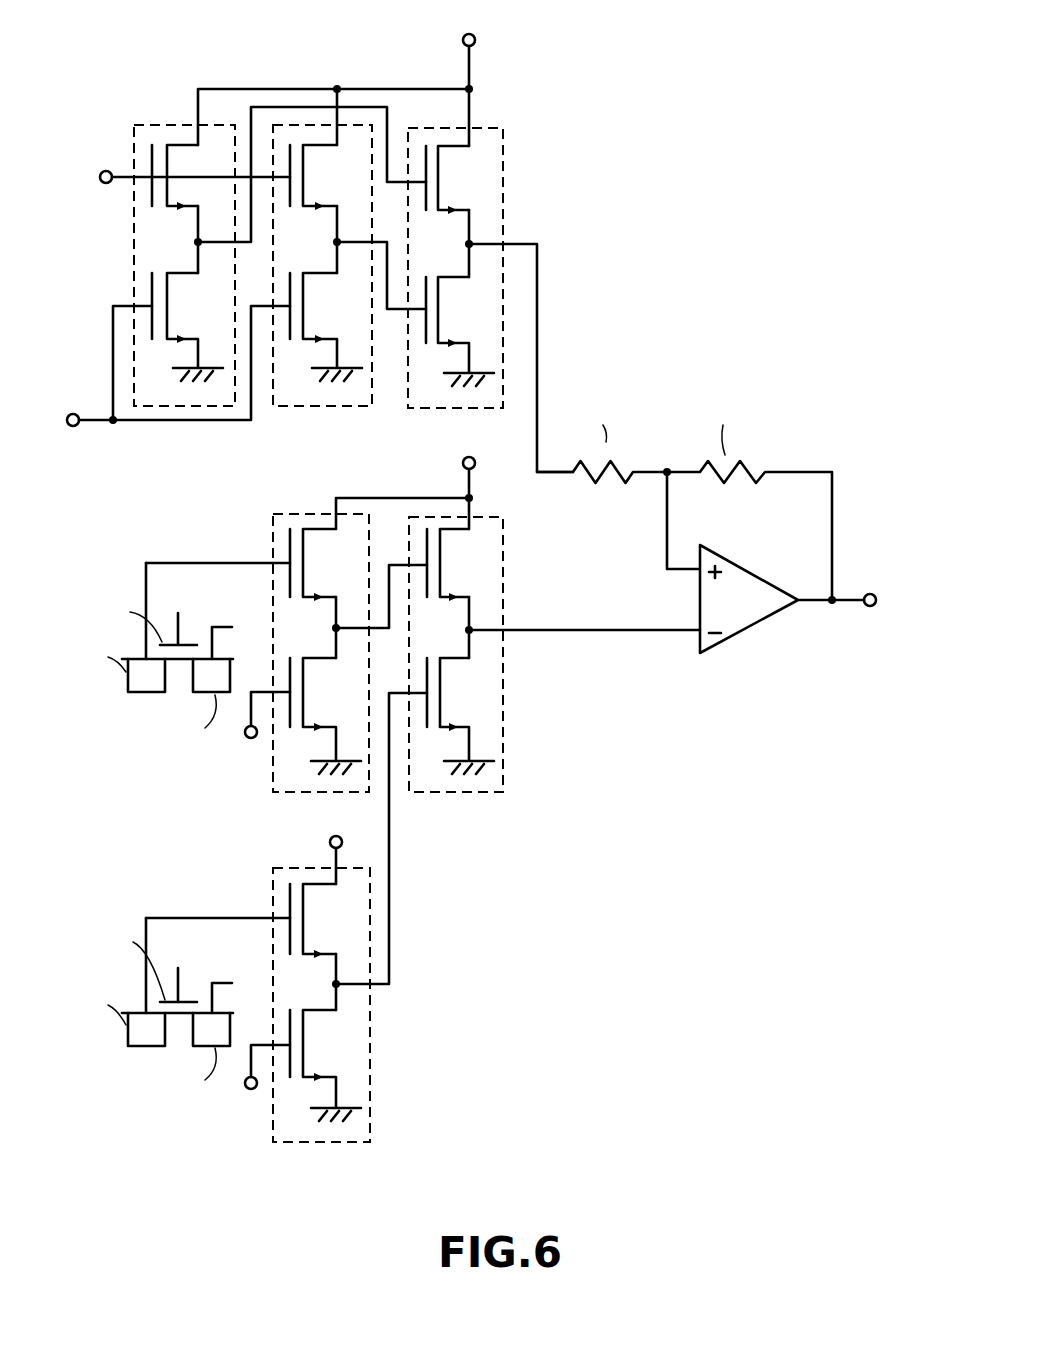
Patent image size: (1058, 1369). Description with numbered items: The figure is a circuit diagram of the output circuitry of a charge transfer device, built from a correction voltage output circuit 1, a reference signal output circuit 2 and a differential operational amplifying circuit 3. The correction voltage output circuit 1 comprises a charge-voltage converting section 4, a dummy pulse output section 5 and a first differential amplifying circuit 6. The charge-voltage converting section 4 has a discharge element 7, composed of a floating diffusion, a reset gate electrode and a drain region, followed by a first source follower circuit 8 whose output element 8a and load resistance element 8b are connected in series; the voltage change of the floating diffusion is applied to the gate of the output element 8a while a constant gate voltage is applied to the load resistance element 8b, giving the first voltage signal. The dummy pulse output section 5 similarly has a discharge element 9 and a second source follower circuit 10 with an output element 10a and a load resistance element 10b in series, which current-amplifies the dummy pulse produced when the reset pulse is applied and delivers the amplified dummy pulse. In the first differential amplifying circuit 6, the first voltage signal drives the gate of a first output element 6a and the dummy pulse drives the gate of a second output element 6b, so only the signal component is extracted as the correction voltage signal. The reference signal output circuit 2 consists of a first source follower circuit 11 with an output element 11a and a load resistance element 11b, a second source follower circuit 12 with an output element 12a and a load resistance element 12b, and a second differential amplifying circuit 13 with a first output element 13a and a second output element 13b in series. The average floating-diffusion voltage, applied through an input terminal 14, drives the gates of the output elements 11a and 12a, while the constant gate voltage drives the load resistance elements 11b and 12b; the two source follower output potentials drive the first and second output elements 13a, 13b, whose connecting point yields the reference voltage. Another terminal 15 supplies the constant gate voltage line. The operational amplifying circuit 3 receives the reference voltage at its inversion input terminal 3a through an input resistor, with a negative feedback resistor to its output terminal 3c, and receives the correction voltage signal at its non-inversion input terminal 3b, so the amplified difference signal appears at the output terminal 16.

The correction voltage output circuit 1 is at (507, 835).
The reference signal output circuit 2 is at (280, 70).
The differential operational amplifying circuit 3 is at (765, 615).
The inversion input terminal 3a is at (700, 577).
The non-inversion input terminal 3b is at (700, 640).
The output terminal 3c is at (800, 593).
The charge-voltage converting section 4 is at (170, 523).
The dummy pulse output section 5 is at (165, 878).
The first differential amplifying circuit 6 is at (507, 680).
The first output element 6a is at (440, 570).
The second output element 6b is at (440, 714).
The discharge element 7 is at (130, 702).
The first source follower circuit 8 is at (272, 532).
The output element 8a is at (312, 527).
The load resistance element 8b is at (300, 740).
The discharge element 9 is at (132, 1062).
The second source follower circuit 10 is at (370, 1122).
The output element 10a is at (303, 900).
The load resistance element 10b is at (303, 1063).
The first source follower circuit 11 is at (165, 125).
The output element 11a is at (177, 209).
The load resistance element 11b is at (152, 283).
The second source follower circuit 12 is at (342, 418).
The output element 12a is at (320, 143).
The load resistance element 12b is at (307, 350).
The second differential amplifying circuit 13 is at (487, 128).
The first output element 13a is at (438, 162).
The second output element 13b is at (438, 297).
The input terminal 14 is at (105, 170).
The gate voltage terminal Vgg1 15 is at (73, 413).
The output terminal 16 is at (870, 594).